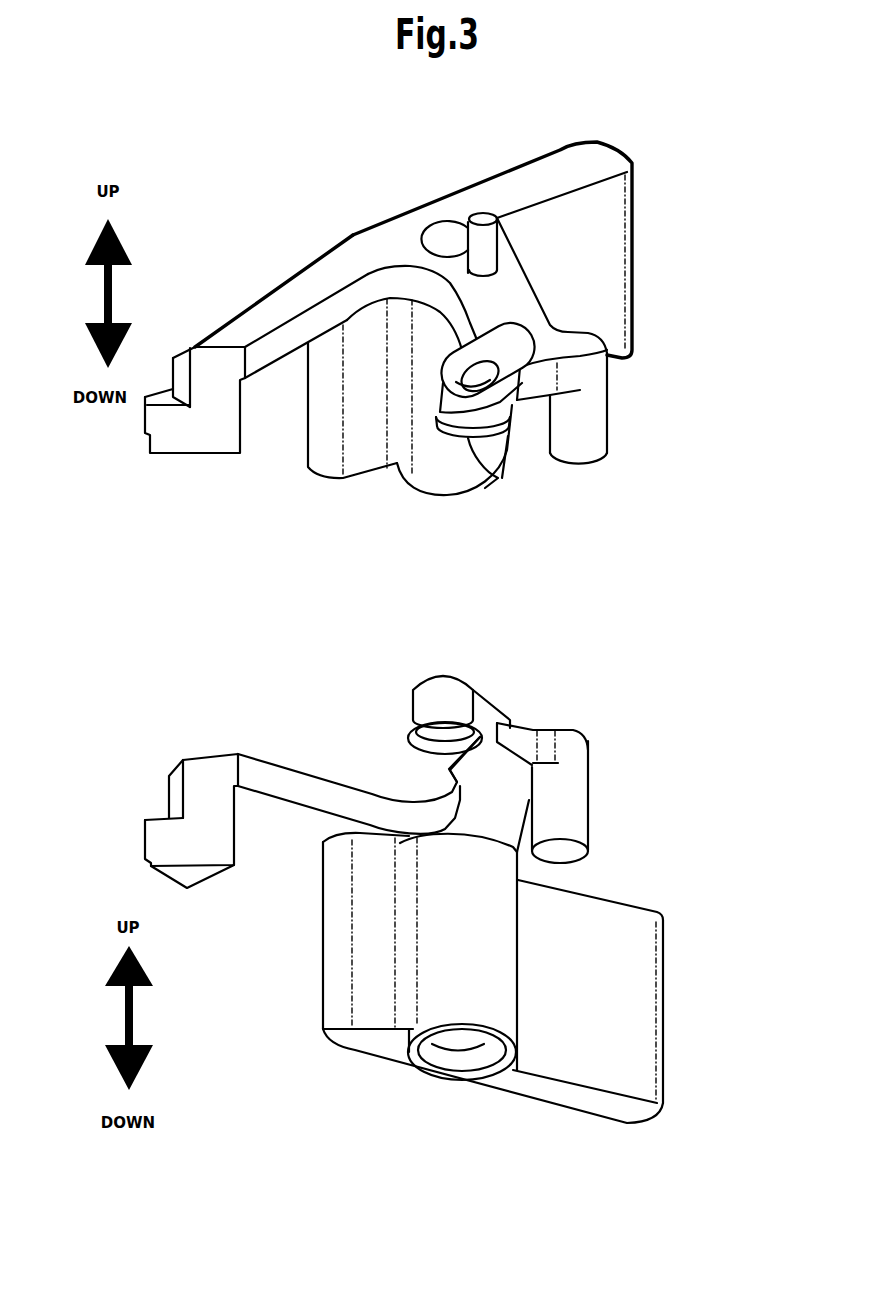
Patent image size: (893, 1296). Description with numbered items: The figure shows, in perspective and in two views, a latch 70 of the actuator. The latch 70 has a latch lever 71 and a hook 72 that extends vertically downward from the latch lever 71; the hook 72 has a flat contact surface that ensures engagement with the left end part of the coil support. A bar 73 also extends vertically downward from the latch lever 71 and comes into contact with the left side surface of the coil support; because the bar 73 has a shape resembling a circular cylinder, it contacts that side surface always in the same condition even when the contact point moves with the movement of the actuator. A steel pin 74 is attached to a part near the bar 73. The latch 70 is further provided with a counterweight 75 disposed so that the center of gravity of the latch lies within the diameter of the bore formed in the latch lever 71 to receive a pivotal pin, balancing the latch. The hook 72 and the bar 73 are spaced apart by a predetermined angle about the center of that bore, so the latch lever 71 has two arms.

The latch 70 is at (407, 632).
The latch lever 71 is at (295, 275).
The hook 72 is at (200, 432).
The bar 73 is at (578, 438).
The steel pin 74 is at (463, 440).
The counterweight 75 is at (572, 260).